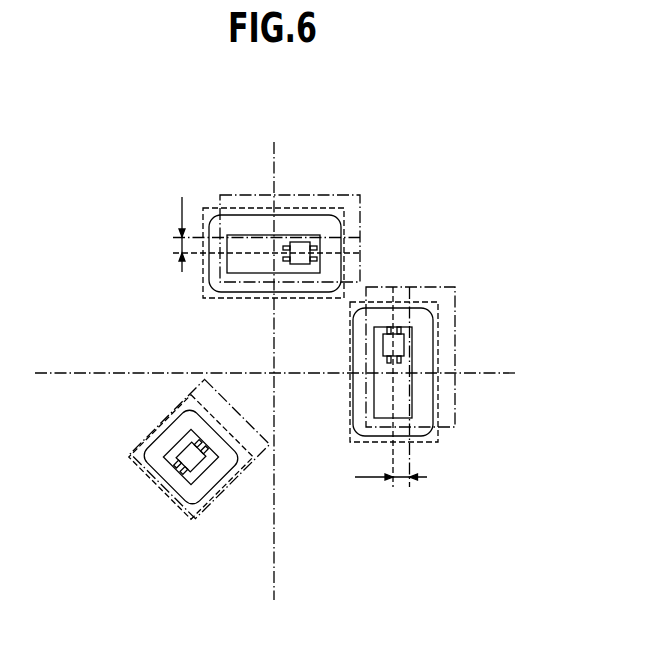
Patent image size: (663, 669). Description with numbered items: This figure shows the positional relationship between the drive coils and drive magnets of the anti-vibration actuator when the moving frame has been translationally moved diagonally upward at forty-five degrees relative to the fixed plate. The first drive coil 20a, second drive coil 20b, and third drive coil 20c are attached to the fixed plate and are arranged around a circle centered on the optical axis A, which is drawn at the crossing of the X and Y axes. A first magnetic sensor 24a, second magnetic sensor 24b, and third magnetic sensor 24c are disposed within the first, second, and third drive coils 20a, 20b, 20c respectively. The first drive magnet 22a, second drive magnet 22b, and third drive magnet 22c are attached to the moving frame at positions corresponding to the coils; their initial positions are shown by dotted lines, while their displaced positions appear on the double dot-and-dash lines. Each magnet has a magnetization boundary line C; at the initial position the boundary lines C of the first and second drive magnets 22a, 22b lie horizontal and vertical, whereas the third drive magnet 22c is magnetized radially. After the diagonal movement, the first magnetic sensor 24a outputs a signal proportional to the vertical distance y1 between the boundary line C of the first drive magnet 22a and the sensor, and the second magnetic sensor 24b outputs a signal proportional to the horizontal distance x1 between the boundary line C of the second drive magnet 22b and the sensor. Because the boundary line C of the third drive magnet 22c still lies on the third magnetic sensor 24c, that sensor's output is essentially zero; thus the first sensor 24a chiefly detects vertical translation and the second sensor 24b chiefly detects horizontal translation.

The first drive coil 20a is at (225, 212).
The second drive coil 20b is at (435, 320).
The third drive coil 20c is at (163, 493).
The first drive magnet 22a is at (295, 192).
The second drive magnet 22b is at (443, 428).
The third drive magnet 22c is at (196, 518).
The first magnetic sensor 24a is at (318, 250).
The second magnetic sensor 24b is at (397, 343).
The third magnetic sensor 24c is at (183, 454).
The magnetization boundary line C is at (327, 230).
The optical axis A is at (273, 373).
The horizontal distance x1 is at (391, 464).
The vertical distance y1 is at (167, 232).